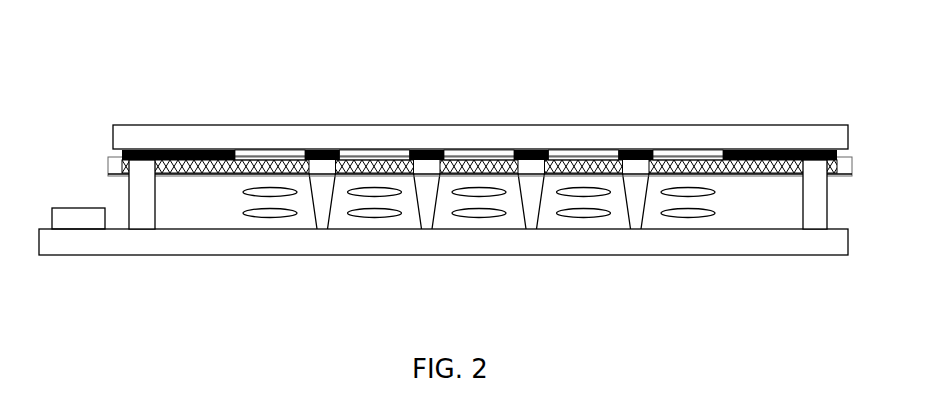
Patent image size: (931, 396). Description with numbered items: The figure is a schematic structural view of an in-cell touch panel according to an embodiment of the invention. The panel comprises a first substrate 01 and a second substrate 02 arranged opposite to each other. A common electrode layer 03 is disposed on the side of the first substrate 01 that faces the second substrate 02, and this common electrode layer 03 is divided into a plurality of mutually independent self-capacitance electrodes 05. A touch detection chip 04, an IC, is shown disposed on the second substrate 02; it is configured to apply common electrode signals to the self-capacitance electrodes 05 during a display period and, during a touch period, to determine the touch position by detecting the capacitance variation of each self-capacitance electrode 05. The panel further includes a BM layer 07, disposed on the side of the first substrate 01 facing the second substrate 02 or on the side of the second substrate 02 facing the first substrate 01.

The first substrate 01 is at (185, 130).
The second substrate 02 is at (240, 243).
The common electrode layer 03 is at (108, 165).
The touch detection chip 04 is at (73, 229).
The self-capacitance electrode 05 is at (715, 173).
The BM layer 07 is at (420, 152).